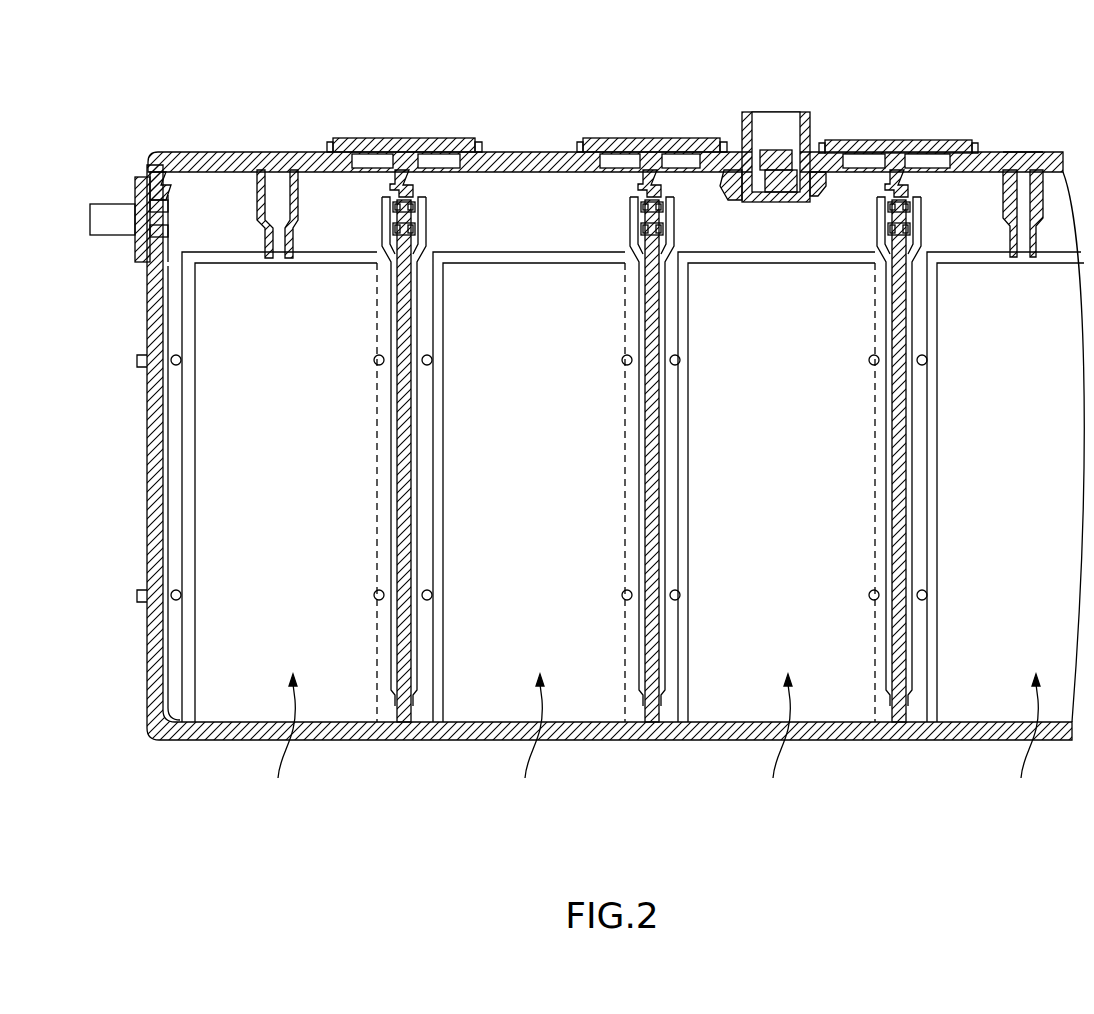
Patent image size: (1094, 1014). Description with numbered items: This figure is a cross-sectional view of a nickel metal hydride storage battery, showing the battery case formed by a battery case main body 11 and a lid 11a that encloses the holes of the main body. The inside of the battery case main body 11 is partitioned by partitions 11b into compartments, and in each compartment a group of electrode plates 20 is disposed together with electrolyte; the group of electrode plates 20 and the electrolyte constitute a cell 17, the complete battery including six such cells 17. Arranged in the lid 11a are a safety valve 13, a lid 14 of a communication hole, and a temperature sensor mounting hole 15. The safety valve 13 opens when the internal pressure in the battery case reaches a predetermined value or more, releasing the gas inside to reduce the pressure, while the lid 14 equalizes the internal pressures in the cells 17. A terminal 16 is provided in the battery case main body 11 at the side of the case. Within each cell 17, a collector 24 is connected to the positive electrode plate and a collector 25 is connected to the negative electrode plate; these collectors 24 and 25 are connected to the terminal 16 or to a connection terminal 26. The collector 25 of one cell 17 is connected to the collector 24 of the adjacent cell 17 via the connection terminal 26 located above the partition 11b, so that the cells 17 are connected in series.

The battery case main body 11 is at (148, 525).
The lid 11a is at (184, 153).
The partitions 11b is at (408, 626).
The safety valve 13 is at (774, 113).
The lid of a communication hole 14 is at (342, 140).
The temperature sensor mounting hole 15 is at (281, 168).
The terminal 16 is at (113, 204).
The cell 17 is at (651, 741).
The group of electrode plates 20 is at (1046, 491).
The collector 24 is at (178, 207).
The collector 25 is at (388, 210).
The connection terminal 26 is at (390, 230).